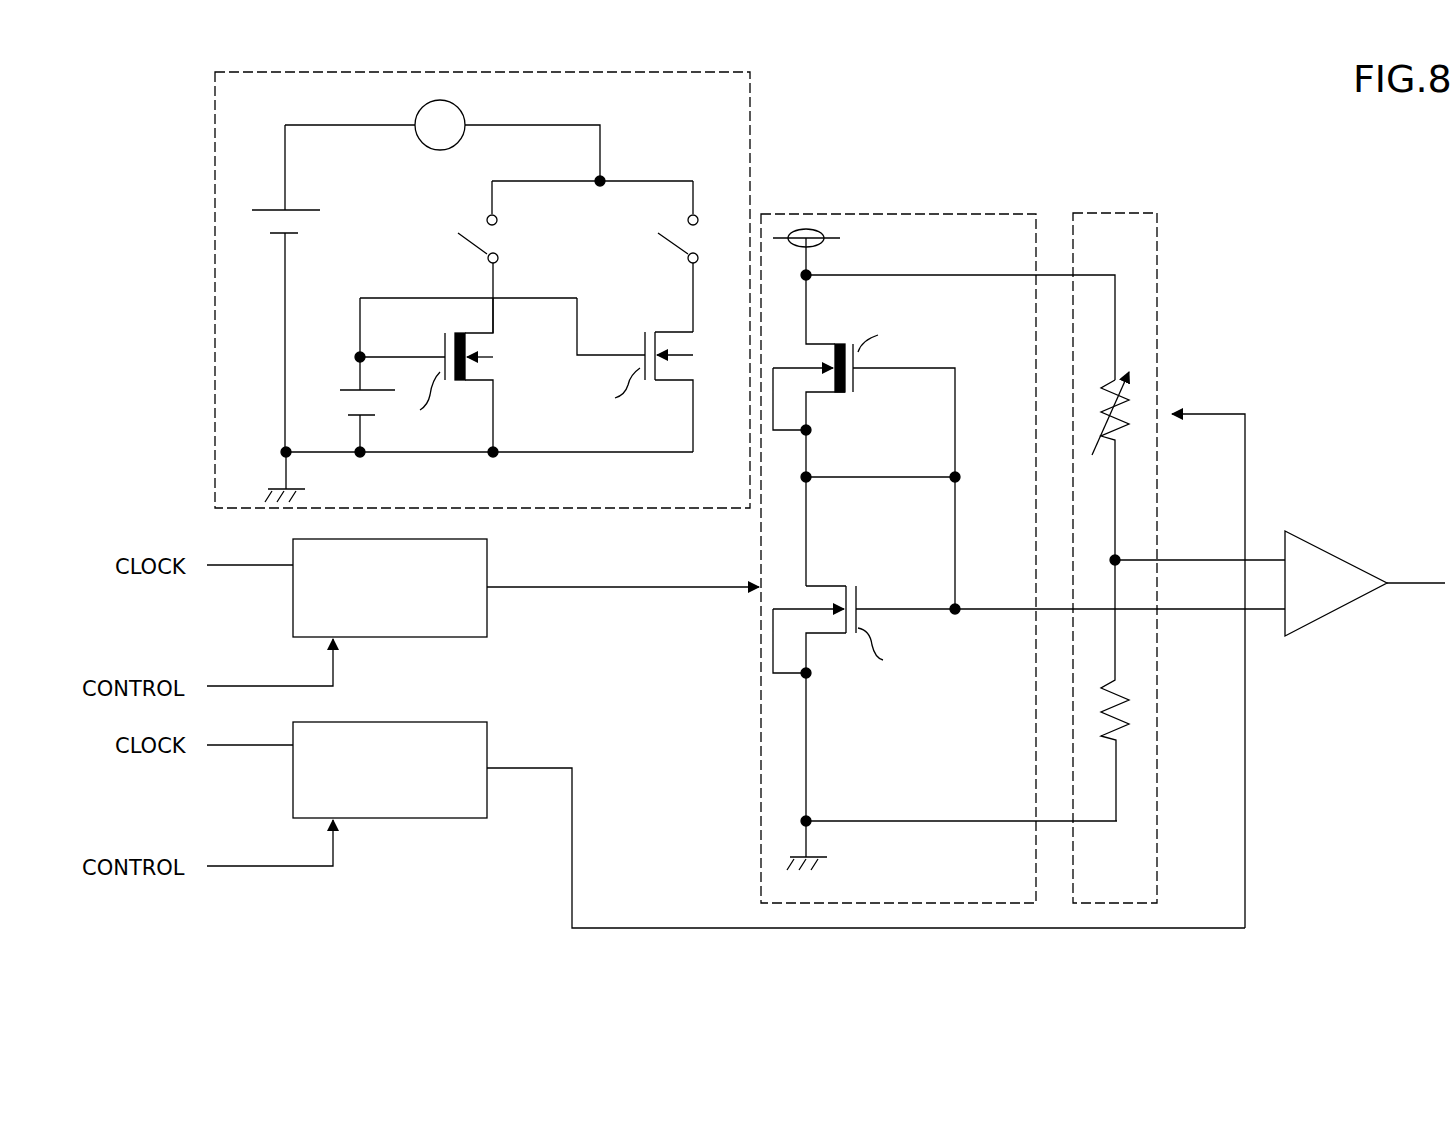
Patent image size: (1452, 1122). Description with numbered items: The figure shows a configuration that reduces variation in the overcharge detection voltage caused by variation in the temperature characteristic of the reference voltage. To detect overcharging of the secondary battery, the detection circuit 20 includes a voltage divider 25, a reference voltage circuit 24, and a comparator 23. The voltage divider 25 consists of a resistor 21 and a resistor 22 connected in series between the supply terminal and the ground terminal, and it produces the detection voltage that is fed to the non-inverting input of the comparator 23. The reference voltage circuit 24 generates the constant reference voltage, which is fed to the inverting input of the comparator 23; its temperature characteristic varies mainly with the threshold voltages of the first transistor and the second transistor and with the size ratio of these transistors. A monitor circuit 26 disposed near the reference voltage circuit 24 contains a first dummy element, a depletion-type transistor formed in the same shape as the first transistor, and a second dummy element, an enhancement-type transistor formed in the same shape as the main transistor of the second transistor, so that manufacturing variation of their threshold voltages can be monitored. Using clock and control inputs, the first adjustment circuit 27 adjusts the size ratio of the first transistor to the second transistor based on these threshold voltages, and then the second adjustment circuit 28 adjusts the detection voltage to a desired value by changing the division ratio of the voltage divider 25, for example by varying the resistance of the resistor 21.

The detection circuit 20 is at (1288, 466).
The resistor 21 is at (1120, 440).
The resistor 22 is at (1122, 742).
The comparator 23 is at (1333, 553).
The reference voltage circuit 24 is at (895, 214).
The voltage divider 25 is at (1115, 213).
The monitor circuit 26 is at (645, 72).
The first adjustment circuit 27 is at (487, 563).
The second adjustment circuit 28 is at (487, 746).